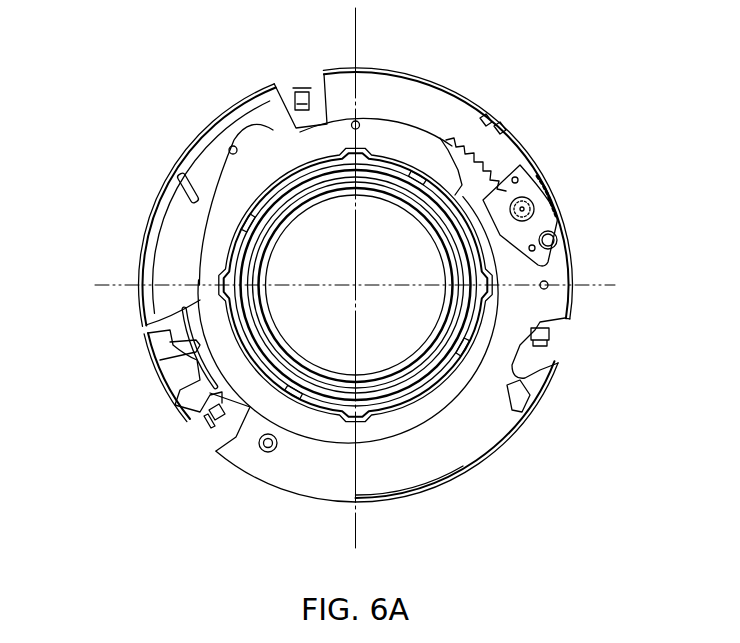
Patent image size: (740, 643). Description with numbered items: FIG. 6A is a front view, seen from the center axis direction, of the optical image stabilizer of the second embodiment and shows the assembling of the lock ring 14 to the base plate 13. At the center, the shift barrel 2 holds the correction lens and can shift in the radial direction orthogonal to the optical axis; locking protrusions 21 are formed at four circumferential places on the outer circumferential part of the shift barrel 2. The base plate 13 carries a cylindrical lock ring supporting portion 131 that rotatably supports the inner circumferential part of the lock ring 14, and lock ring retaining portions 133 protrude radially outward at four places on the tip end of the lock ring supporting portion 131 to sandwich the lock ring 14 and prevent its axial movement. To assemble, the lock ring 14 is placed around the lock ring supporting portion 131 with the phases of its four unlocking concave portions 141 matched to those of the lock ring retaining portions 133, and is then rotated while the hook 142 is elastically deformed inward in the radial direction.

The shift barrel 2 is at (433, 343).
The base plate 13 is at (490, 420).
The lock ring 14 is at (217, 243).
The locking protrusions 21 is at (447, 343).
The lock ring supporting portion 131 is at (450, 200).
The lock ring retaining portions 133 is at (367, 158).
The unlocking concave portions 141 is at (340, 150).
The hook 142 is at (187, 377).